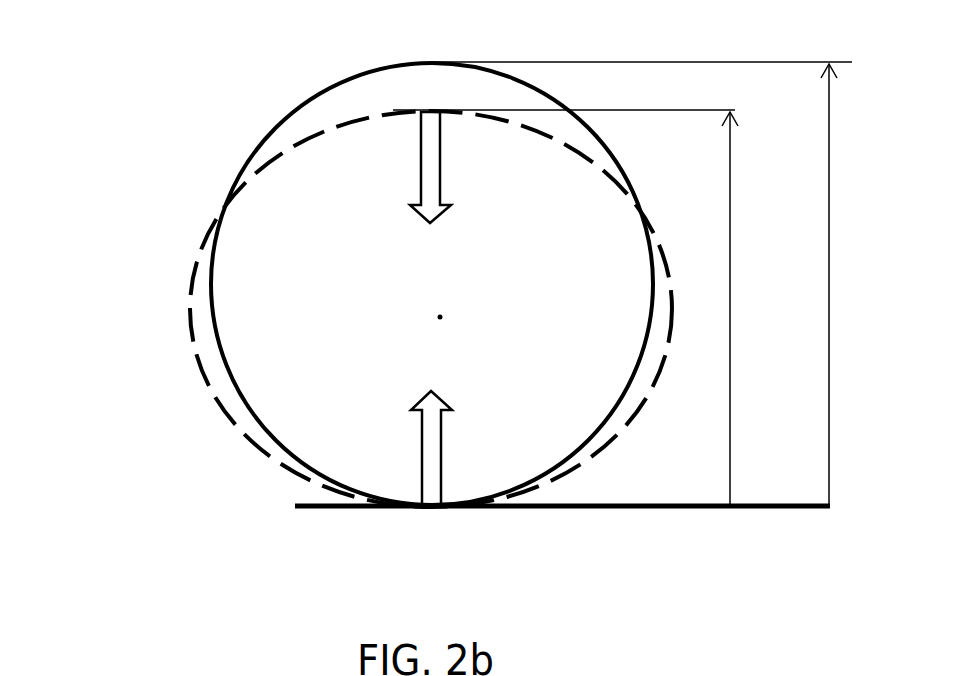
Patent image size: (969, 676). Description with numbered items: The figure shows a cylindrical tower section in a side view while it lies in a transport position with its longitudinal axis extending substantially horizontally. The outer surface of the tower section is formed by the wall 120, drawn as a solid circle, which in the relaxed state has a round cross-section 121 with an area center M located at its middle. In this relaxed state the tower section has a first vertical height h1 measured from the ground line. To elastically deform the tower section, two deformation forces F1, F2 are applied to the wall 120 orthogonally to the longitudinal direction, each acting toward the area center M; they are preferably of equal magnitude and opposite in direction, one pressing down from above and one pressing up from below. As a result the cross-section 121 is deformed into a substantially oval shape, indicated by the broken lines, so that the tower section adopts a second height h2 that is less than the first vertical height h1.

The wall 120 is at (247, 157).
The cross-section 121 is at (237, 237).
The area center M is at (452, 316).
The deformation force F1 is at (448, 167).
The deformation force F2 is at (448, 447).
The vertical height h1 is at (655, 284).
The second height h2 is at (585, 308).